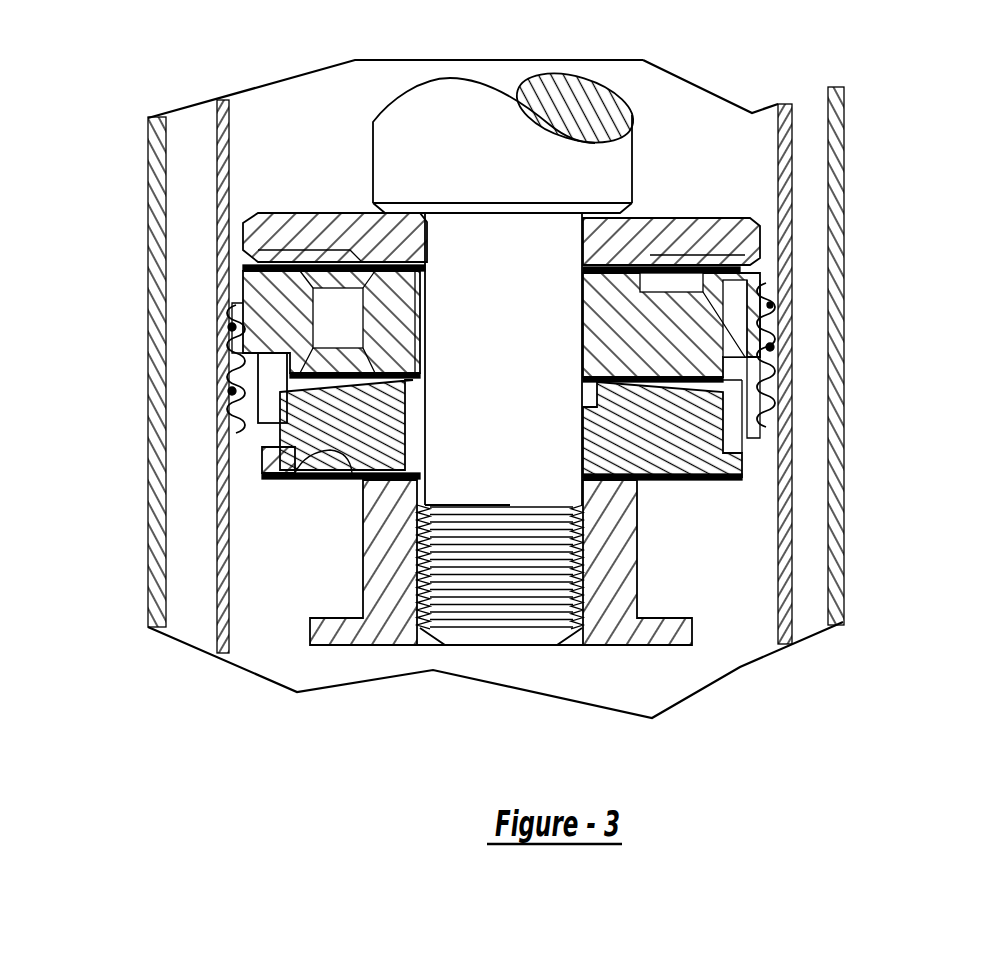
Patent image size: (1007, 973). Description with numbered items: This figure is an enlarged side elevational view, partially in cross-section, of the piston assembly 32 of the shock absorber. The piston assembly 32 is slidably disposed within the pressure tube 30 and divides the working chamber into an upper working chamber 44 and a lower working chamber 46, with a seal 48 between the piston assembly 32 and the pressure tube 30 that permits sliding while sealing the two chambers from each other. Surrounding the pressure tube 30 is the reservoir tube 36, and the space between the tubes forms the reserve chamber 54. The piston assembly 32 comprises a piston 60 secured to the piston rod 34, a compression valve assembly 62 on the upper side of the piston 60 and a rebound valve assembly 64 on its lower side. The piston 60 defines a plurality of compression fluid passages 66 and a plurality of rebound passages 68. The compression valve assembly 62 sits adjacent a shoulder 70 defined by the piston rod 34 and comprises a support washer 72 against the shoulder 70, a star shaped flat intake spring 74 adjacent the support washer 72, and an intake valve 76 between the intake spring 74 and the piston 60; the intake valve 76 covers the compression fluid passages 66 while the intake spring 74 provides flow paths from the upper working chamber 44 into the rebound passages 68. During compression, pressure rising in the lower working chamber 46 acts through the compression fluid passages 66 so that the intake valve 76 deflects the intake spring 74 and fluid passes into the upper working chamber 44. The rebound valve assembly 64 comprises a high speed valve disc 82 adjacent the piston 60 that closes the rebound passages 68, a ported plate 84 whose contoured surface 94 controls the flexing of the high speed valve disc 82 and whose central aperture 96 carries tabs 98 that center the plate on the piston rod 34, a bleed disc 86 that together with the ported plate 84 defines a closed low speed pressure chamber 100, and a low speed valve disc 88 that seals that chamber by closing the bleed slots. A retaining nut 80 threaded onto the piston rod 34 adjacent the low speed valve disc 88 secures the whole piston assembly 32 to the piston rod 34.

The pressure tube 30 is at (788, 143).
The piston assembly 32 is at (297, 190).
The piston rod 34 is at (524, 190).
The reservoir tube 36 is at (843, 117).
The upper working chamber 44 is at (696, 182).
The lower working chamber 46 is at (720, 582).
The seal 48 is at (232, 345).
The reserve chamber 54 is at (810, 180).
The piston 60 is at (735, 300).
The compression valve assembly 62 is at (313, 140).
The rebound valve assembly 64 is at (292, 547).
The compression fluid passages 66 is at (765, 335).
The rebound passages 68 is at (333, 308).
The shoulder 70 is at (582, 250).
The support washer 72 is at (760, 237).
The intake spring 74 is at (290, 258).
The intake valve 76 is at (757, 267).
The retaining nut 80 is at (337, 633).
The high speed valve disc 82 is at (257, 382).
The ported plate 84 is at (283, 418).
The bleed disc 86 is at (277, 457).
The low speed valve disc 88 is at (290, 477).
The contoured surface 94 is at (690, 400).
The central aperture 96 is at (280, 418).
The tabs 98 is at (583, 420).
The low speed pressure chamber 100 is at (683, 463).